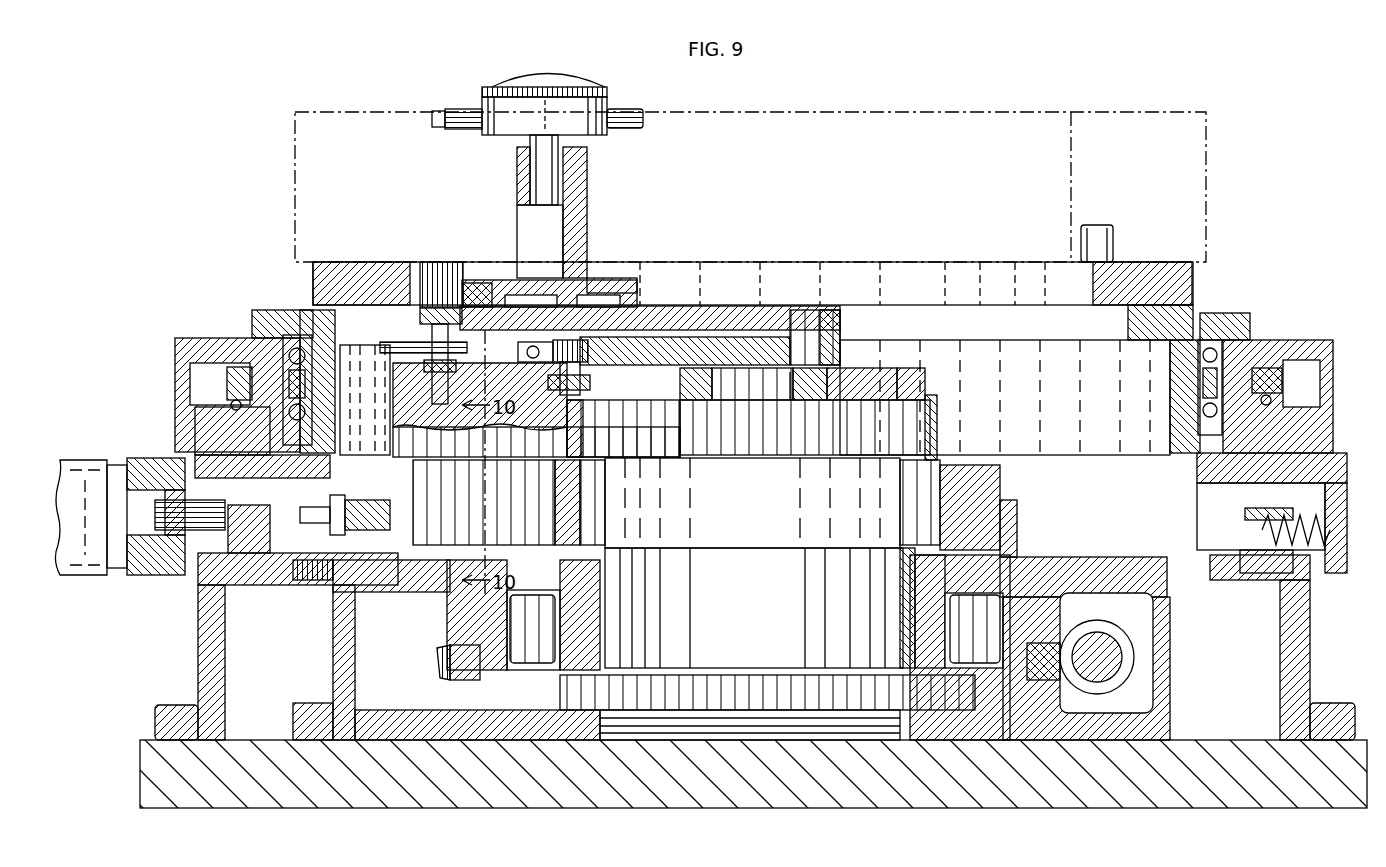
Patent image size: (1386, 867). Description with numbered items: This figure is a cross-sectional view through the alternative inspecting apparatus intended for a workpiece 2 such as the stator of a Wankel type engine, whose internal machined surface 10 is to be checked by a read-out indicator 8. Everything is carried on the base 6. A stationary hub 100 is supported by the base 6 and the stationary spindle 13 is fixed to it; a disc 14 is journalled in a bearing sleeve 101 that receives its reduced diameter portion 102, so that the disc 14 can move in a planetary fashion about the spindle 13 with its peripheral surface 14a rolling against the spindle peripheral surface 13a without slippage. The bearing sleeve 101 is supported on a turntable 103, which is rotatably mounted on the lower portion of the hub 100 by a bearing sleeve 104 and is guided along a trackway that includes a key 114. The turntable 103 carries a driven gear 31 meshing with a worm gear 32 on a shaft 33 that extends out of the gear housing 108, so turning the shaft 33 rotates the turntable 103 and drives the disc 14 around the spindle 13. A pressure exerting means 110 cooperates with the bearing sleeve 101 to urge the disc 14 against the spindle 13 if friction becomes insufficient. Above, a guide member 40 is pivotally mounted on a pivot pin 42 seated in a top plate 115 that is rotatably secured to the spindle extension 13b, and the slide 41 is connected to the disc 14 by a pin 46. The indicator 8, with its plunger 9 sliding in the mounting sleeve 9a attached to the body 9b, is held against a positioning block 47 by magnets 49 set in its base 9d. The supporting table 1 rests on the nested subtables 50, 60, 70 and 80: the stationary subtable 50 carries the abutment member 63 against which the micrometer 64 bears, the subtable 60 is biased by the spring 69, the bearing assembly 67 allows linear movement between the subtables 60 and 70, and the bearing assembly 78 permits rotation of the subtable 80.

The supporting table 1 is at (1148, 262).
The workpiece 2 is at (1208, 185).
The base 6 is at (835, 808).
The read-out indicator 8 is at (588, 75).
The sensing plunger 9 is at (436, 111).
The mounting sleeve 9a is at (468, 109).
The indicator body 9b is at (545, 100).
The indicator base 9d is at (605, 280).
The internal machined surface 10 is at (1070, 120).
The stationary spindle 13 is at (922, 420).
The spindle peripheral surface 13a is at (937, 420).
The spindle extension 13b is at (795, 400).
The disc 14 is at (555, 436).
The disc peripheral surface 14a is at (388, 420).
The driven gear 31 is at (437, 665).
The worm gear 32 is at (1075, 688).
The shaft 33 is at (1110, 655).
The guide member 40 is at (740, 338).
The slide 41 is at (655, 306).
The pivot pin 42 is at (560, 385).
The pin 46 is at (428, 322).
The positioning block 47 is at (462, 278).
The magnets 49 is at (545, 282).
The subtable 50 is at (210, 640).
The subtable 60 is at (200, 420).
The abutment member 63 is at (252, 535).
The micrometer 64 is at (78, 470).
The bearing assembly 67 is at (215, 385).
The spring 69 is at (1330, 478).
The subtable 70 is at (1290, 340).
The bearing assembly 78 is at (1232, 326).
The subtable 80 is at (308, 318).
The stationary hub 100 is at (770, 619).
The bearing sleeve 101 is at (580, 498).
The reduced diameter portion 102 is at (575, 516).
The turntable 103 is at (412, 585).
The bearing sleeve 104 is at (895, 580).
The gear housing 108 is at (1160, 680).
The pressure exerting means 110 is at (325, 500).
The key 114 is at (360, 580).
The top plate 115 is at (860, 368).